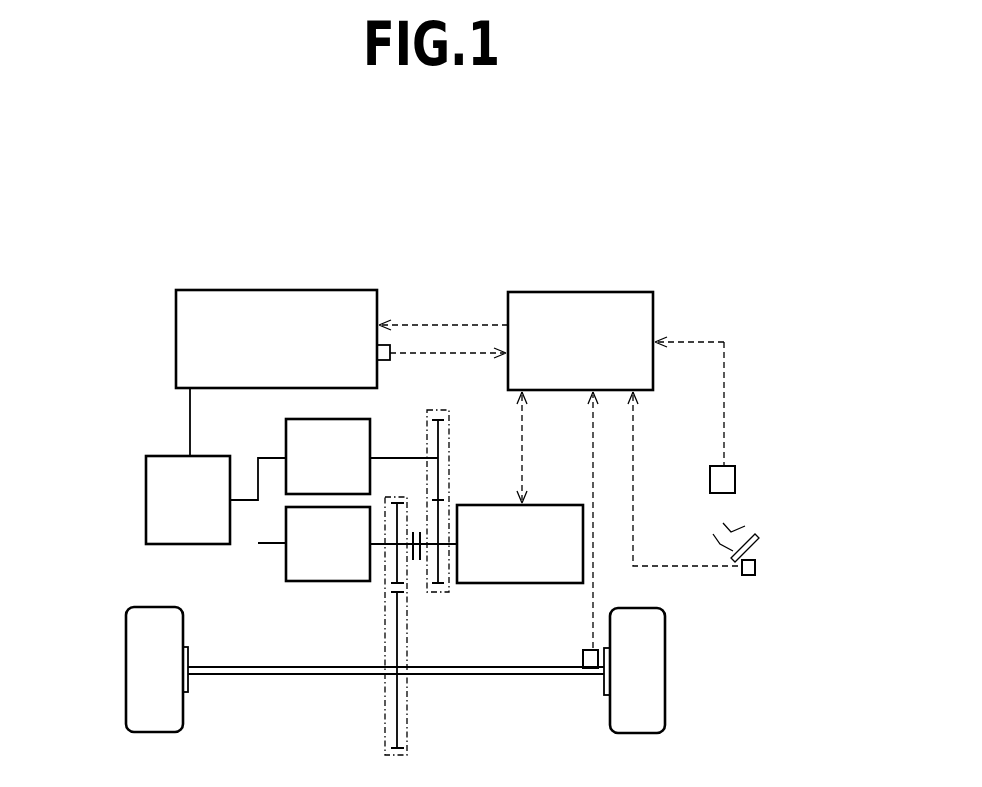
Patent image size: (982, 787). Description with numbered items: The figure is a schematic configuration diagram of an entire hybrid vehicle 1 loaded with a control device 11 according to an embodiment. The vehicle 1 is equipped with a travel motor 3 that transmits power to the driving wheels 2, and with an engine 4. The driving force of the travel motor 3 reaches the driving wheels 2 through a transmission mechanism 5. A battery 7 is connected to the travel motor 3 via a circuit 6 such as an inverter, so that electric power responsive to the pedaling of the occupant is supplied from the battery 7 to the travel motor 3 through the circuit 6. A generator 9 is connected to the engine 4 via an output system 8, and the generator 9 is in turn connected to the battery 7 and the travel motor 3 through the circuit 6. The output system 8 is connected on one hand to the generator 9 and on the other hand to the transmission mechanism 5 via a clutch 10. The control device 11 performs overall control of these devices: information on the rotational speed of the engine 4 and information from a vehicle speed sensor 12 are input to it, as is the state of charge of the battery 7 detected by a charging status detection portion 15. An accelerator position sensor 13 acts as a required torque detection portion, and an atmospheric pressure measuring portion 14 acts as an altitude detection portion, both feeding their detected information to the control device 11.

The hybrid vehicle 1 is at (700, 249).
The driving wheels 2 is at (126, 670).
The travel motor 3 is at (300, 581).
The engine 4 is at (488, 505).
The transmission mechanism 5 is at (381, 580).
The circuit 6 is at (146, 524).
The battery 7 is at (323, 290).
The output system 8 is at (449, 468).
The generator 9 is at (365, 440).
The clutch 10 is at (415, 563).
The control device 11 is at (595, 292).
The vehicle speed sensor 12 is at (581, 650).
The accelerator position sensor 13 is at (756, 567).
The atmospheric pressure measuring portion 14 is at (735, 478).
The charging status detection portion 15 is at (386, 362).